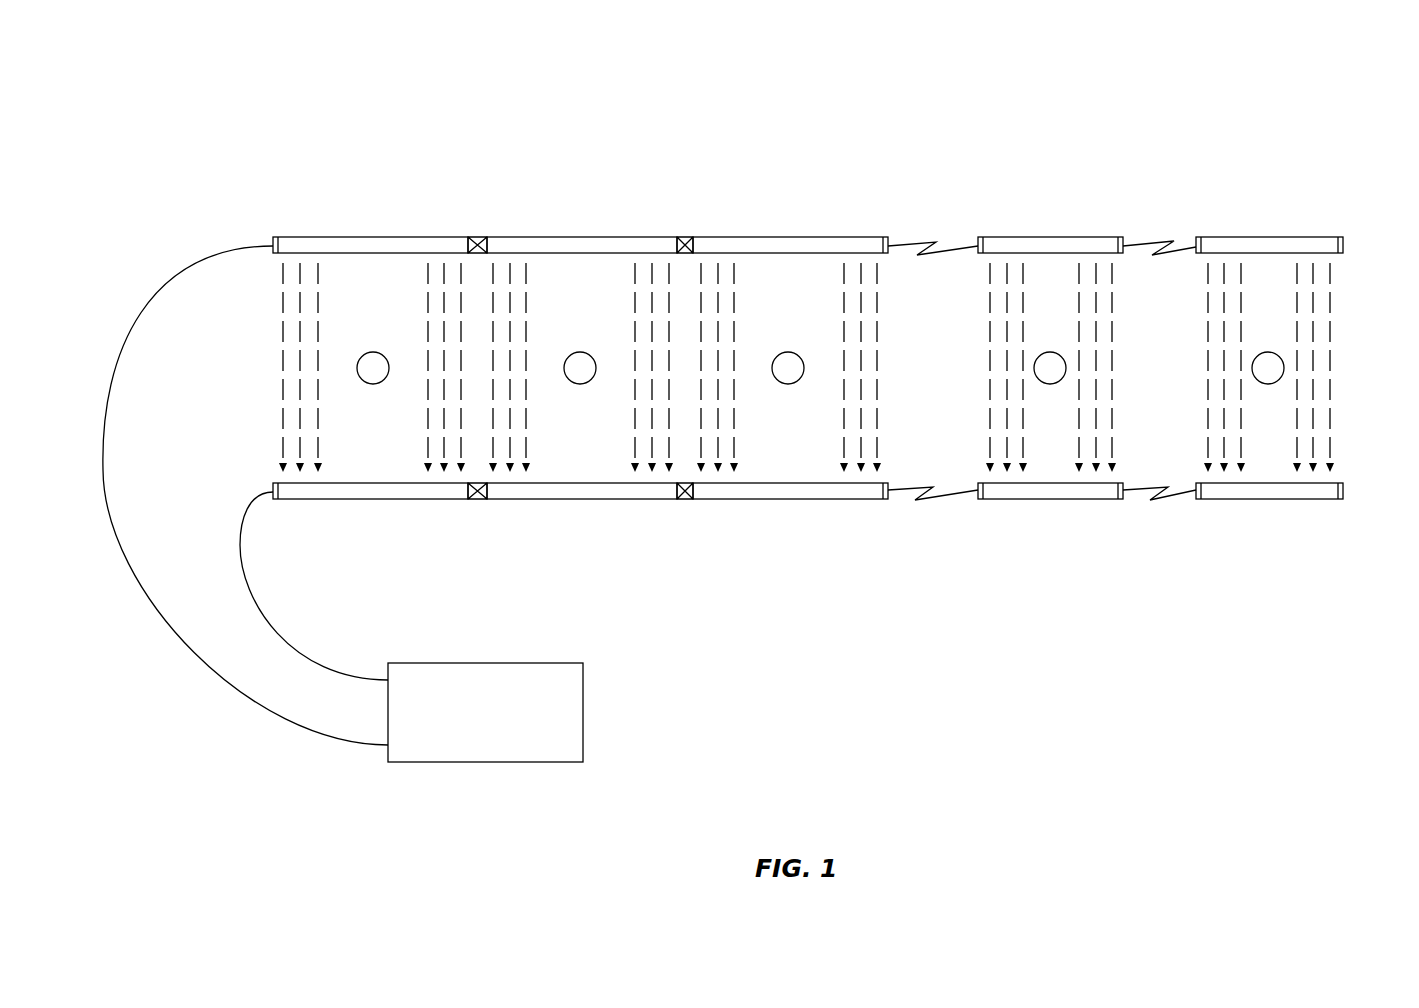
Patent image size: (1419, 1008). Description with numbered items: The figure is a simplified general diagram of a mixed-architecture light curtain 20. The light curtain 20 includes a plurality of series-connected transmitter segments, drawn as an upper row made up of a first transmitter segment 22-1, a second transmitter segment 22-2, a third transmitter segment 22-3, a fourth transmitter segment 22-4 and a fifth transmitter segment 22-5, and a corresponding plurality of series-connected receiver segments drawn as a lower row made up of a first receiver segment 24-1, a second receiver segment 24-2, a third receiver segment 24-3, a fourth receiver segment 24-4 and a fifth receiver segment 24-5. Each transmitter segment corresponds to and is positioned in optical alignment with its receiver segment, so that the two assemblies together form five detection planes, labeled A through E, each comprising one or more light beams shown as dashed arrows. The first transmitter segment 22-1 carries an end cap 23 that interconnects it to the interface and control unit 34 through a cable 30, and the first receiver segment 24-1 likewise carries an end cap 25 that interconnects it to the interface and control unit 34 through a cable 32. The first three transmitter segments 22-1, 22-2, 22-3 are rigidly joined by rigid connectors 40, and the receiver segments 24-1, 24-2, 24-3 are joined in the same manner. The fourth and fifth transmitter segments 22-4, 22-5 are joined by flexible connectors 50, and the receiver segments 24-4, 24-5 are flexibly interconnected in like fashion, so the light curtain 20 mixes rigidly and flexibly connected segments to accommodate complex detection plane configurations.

The light curtain 20 is at (746, 409).
The first transmitter segment 22-1 is at (359, 237).
The second transmitter segment 22-2 is at (549, 237).
The third transmitter segment 22-3 is at (777, 237).
The fourth transmitter segment 22-4 is at (1027, 237).
The fifth transmitter segment 22-5 is at (1247, 237).
The end cap 23 is at (274, 237).
The first receiver segment 24-1 is at (357, 500).
The second receiver segment 24-2 is at (545, 500).
The third receiver segment 24-3 is at (775, 500).
The fourth receiver segment 24-4 is at (1022, 500).
The fifth receiver segment 24-5 is at (1242, 500).
The end cap 25 is at (274, 483).
The cable 30 is at (293, 732).
The cable 32 is at (293, 647).
The interface and control unit 34 is at (535, 663).
The rigid connector 40 is at (577, 370).
The flexible connector 50 is at (1042, 371).